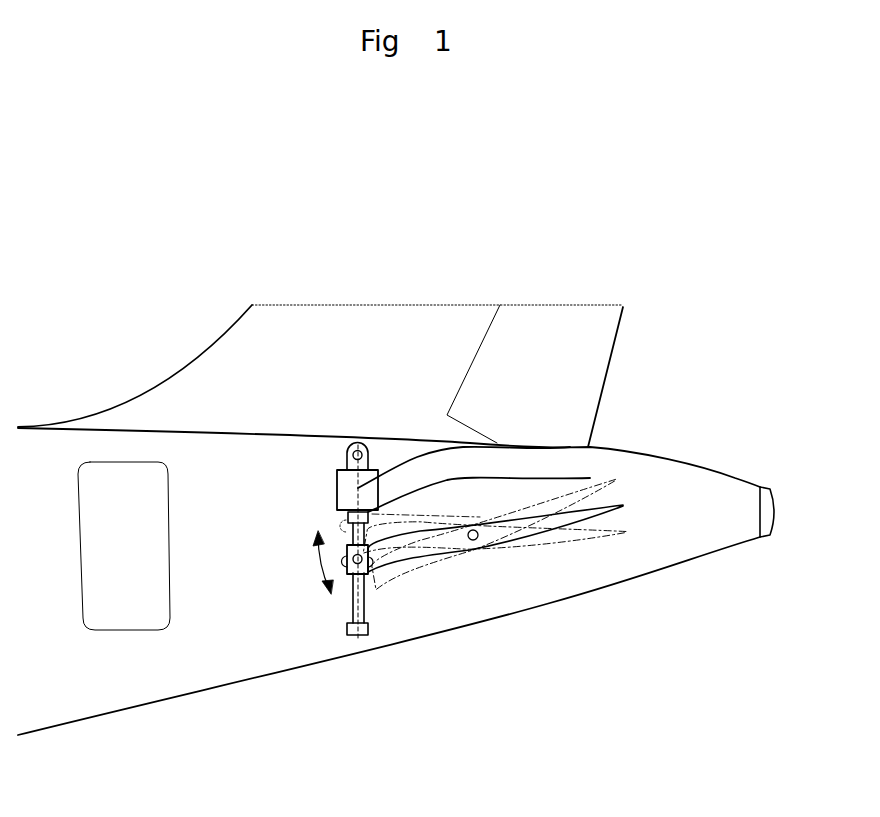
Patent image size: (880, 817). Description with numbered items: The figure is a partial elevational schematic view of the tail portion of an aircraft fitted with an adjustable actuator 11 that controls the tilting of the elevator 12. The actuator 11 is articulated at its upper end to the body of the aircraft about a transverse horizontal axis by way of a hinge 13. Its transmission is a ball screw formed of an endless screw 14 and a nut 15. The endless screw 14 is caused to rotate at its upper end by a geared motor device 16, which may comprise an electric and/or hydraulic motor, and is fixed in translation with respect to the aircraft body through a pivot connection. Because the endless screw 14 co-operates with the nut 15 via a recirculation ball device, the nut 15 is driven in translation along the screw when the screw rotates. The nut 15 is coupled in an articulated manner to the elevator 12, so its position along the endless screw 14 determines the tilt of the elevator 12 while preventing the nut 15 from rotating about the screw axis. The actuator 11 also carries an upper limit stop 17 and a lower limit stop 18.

The adjustable actuator 11 is at (298, 519).
The elevator 12 is at (582, 514).
The hinge 13 is at (357, 446).
The endless screw 14 is at (357, 607).
The nut 15 is at (347, 572).
The geared motor device 16 is at (567, 446).
The upper limit stop 17 is at (590, 478).
The lower limit stop 18 is at (368, 630).